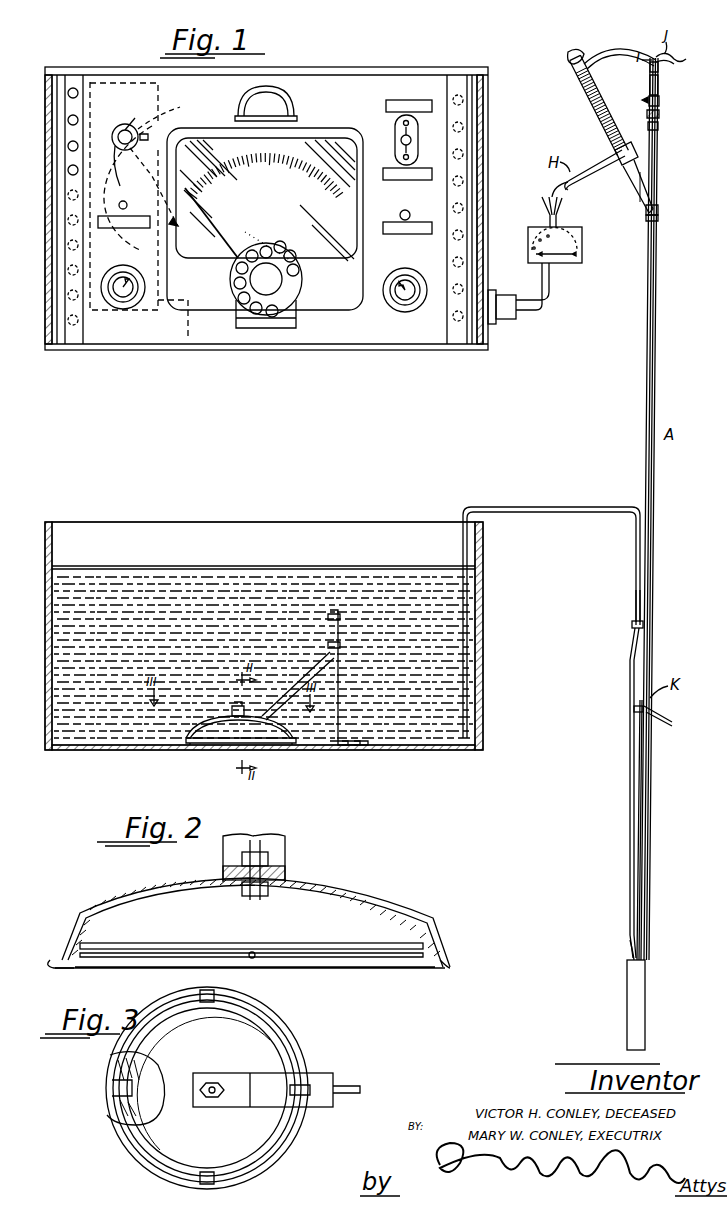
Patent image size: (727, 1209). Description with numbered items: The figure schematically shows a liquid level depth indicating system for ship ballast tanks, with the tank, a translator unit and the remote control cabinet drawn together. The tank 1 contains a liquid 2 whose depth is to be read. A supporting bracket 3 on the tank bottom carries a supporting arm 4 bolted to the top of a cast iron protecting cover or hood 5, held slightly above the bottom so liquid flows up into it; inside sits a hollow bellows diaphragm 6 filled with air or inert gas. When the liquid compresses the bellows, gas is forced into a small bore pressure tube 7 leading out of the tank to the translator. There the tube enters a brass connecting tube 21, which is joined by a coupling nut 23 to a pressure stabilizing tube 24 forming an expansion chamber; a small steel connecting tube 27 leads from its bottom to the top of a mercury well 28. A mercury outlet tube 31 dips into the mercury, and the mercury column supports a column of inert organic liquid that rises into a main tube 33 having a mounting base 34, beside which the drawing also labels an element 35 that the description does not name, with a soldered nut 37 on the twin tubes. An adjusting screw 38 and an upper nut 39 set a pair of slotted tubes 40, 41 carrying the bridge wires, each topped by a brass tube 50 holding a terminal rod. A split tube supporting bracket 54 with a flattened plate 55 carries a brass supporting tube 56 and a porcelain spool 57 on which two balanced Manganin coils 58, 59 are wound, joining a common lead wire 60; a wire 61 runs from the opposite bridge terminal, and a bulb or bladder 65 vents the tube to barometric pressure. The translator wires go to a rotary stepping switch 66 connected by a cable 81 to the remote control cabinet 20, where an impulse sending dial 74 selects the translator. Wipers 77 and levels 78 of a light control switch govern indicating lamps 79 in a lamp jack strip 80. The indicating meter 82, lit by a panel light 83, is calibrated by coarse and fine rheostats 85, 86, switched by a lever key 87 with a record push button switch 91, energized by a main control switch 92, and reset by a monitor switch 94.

In FIG. 1, the tank 1 is at (44, 542).
In FIG. 1, the liquid 2 is at (140, 564).
In FIG. 1, the supporting bracket 3 is at (340, 660).
In FIG. 1, the supporting arm 4 is at (274, 684).
In FIG. 2, the supporting arm 4 is at (284, 842).
In FIG. 3, the supporting arm 4 is at (330, 1078).
In FIG. 1, the protecting cover or hood 5 is at (226, 718).
In FIG. 2, the protecting cover or hood 5 is at (360, 896).
In FIG. 3, the protecting cover or hood 5 is at (231, 1057).
In FIG. 1, the bellows diaphragm 6 is at (214, 744).
In FIG. 2, the bellows diaphragm 6 is at (350, 936).
In FIG. 3, the bellows diaphragm 6 is at (110, 1106).
In FIG. 1, the pressure tube 7 is at (512, 510).
In FIG. 2, the pressure tube 7 is at (254, 960).
In FIG. 3, the pressure tube 7 is at (354, 1086).
In FIG. 1, the remote control cabinet 20 is at (365, 70).
In FIG. 1, the connecting tube 21 is at (634, 604).
In FIG. 1, the coupling nut 23 is at (630, 626).
In FIG. 1, the pressure stabilizing tube 24 is at (628, 778).
In FIG. 1, the connecting tube 27 is at (626, 954).
In FIG. 1, the mercury well 28 is at (628, 1013).
In FIG. 1, the mercury outlet tube 31 is at (648, 804).
In FIG. 1, the main tube 33 is at (646, 380).
In FIG. 1, the mounting base 34 is at (648, 716).
In FIG. 1, the rod inner tube 35 is at (658, 381).
In FIG. 1, the nut 37 is at (660, 128).
In FIG. 1, the adjusting screw 38 is at (660, 115).
In FIG. 1, the upper nut 39 is at (660, 106).
In FIG. 1, the tube 40 is at (650, 80).
In FIG. 1, the tube 41 is at (660, 94).
In FIG. 1, the brass tube 50 is at (674, 58).
In FIG. 1, the split tube supporting bracket 54 is at (650, 208).
In FIG. 1, the plate 55 is at (648, 214).
In FIG. 1, the brass supporting tube 56 is at (638, 172).
In FIG. 1, the porcelain spool 57 is at (568, 50).
In FIG. 1, the balanced coil 58 is at (624, 46).
In FIG. 1, the balanced coil 59 is at (634, 58).
In FIG. 1, the common lead wire 60 is at (552, 190).
In FIG. 1, the wire 61 is at (674, 714).
In FIG. 1, the bulb or bladder 65 is at (642, 100).
In FIG. 1, the rotary stepping switch 66 is at (582, 254).
In FIG. 1, the impulse sending dial 74 is at (255, 322).
In FIG. 1, the wiper 77 is at (164, 158).
In FIG. 1, the level 78 is at (144, 235).
In FIG. 1, the indicating lamp 79 is at (67, 110).
In FIG. 1, the lamp jack strip 80 is at (67, 176).
In FIG. 1, the cable 81 is at (533, 305).
In FIG. 1, the indicating meter 82 is at (284, 208).
In FIG. 1, the panel light 83 is at (240, 102).
In FIG. 1, the rheostat 85 is at (404, 302).
In FIG. 1, the rheostat 86 is at (120, 300).
In FIG. 1, the lever key 87 is at (402, 140).
In FIG. 1, the push button switch 91 is at (403, 209).
In FIG. 1, the main control switch 92 is at (130, 121).
In FIG. 1, the monitor switch 94 is at (128, 201).